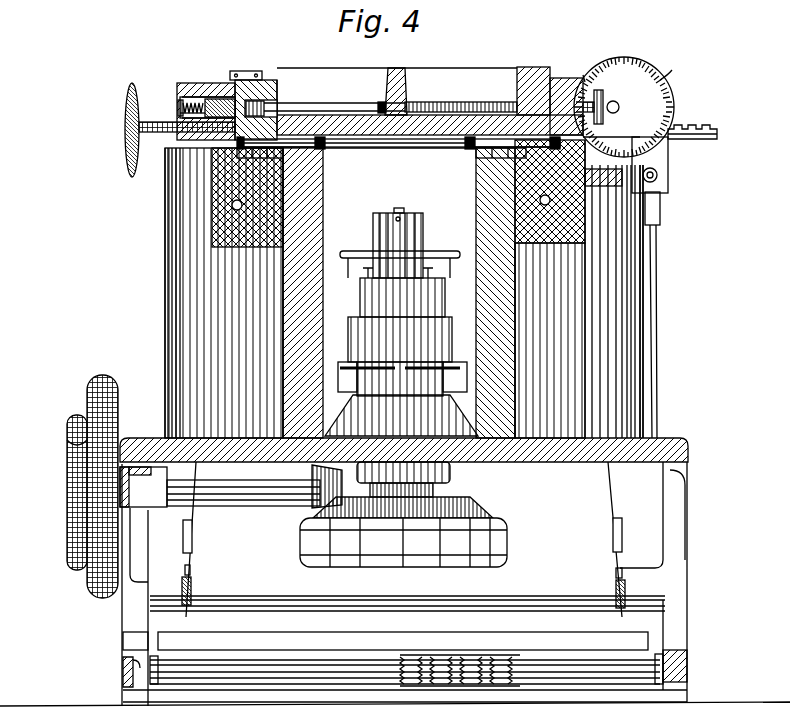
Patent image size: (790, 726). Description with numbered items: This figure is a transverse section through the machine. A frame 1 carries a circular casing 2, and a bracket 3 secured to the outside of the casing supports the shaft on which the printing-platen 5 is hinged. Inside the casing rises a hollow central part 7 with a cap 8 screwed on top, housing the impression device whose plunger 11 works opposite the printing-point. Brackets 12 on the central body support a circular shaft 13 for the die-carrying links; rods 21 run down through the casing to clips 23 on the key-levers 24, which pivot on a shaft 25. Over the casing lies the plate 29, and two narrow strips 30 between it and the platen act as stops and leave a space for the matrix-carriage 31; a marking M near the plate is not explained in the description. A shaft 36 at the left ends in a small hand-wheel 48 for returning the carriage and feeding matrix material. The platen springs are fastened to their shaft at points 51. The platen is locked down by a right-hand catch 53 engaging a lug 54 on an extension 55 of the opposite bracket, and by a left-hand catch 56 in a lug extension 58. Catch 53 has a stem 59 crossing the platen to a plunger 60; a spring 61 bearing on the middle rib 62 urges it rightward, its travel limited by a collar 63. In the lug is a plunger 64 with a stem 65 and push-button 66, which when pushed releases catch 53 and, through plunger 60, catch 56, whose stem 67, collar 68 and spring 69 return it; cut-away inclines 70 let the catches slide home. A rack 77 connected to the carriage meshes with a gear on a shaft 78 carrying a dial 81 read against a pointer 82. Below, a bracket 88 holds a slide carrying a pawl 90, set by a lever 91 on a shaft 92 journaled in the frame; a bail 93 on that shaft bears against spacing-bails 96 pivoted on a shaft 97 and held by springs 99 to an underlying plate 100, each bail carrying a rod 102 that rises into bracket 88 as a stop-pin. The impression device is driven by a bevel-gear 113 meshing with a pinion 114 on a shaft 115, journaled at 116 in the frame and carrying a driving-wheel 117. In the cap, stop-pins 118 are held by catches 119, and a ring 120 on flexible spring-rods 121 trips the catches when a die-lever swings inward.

The frame 1 is at (116, 618).
The casing 2 is at (165, 298).
The bracket 3 is at (212, 222).
The printing-platen 5 is at (470, 68).
The raised central part 7 is at (401, 415).
The cap 8 is at (400, 337).
The plunger 11 is at (398, 208).
The brackets 12 is at (402, 377).
The circular shaft 13 is at (340, 368).
The rods 21 is at (200, 520).
The clips 23 is at (192, 572).
The key-levers 24 is at (195, 588).
The shaft 25 is at (282, 576).
The plate 29 is at (355, 150).
The strips 30 is at (237, 143).
The matrix-carriage 31 is at (462, 150).
The shaft 36 is at (152, 134).
The hand-wheel 48 is at (117, 130).
The points 51 is at (212, 97).
The catch 53 is at (530, 95).
The lug 54 is at (584, 72).
The extension 55 is at (619, 144).
The catch 56 is at (225, 99).
The extension 58 is at (182, 83).
The stem 59 is at (350, 100).
The plunger 60 is at (265, 104).
The spring 61 is at (435, 102).
The middle rib 62 is at (396, 68).
The collar 63 is at (381, 100).
The plunger 64 is at (598, 75).
The stem 65 is at (600, 90).
The push-button 66 is at (603, 98).
The stem 67 is at (178, 104).
The collar 68 is at (180, 108).
The spring 69 is at (180, 120).
The cut-away inclined surfaces 70 is at (560, 78).
The rack 77 is at (705, 132).
The shaft 78 is at (622, 107).
The dial 81 is at (677, 70).
The pointer 82 is at (603, 177).
The bracket 88 is at (670, 170).
The pawl 90 is at (662, 218).
The lever 91 is at (660, 340).
The shaft 92 is at (260, 680).
The bail 93 is at (160, 684).
The spacing-bails 96 is at (403, 634).
The shaft 97 is at (130, 655).
The springs 99 is at (410, 683).
The underlying plate 100 is at (348, 695).
The rod 102 is at (658, 282).
The bevel-gear 113 is at (406, 514).
The pinion 114 is at (312, 500).
The shaft 115 is at (240, 502).
The journal 116 is at (163, 510).
The driving-wheel 117 is at (78, 486).
The stop-pins 118 is at (433, 274).
The catches 119 is at (412, 232).
The ring 120 is at (358, 251).
The spring-rods 121 is at (348, 270).
The scale M is at (381, 161).